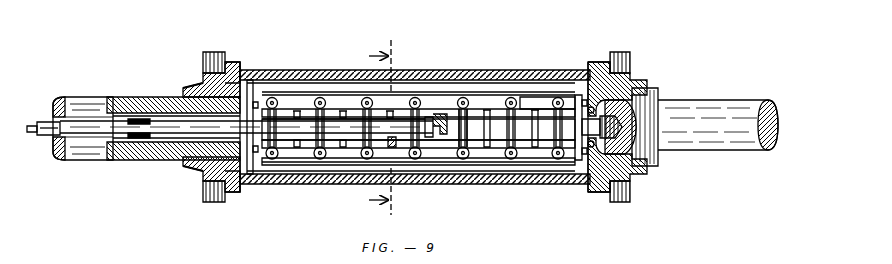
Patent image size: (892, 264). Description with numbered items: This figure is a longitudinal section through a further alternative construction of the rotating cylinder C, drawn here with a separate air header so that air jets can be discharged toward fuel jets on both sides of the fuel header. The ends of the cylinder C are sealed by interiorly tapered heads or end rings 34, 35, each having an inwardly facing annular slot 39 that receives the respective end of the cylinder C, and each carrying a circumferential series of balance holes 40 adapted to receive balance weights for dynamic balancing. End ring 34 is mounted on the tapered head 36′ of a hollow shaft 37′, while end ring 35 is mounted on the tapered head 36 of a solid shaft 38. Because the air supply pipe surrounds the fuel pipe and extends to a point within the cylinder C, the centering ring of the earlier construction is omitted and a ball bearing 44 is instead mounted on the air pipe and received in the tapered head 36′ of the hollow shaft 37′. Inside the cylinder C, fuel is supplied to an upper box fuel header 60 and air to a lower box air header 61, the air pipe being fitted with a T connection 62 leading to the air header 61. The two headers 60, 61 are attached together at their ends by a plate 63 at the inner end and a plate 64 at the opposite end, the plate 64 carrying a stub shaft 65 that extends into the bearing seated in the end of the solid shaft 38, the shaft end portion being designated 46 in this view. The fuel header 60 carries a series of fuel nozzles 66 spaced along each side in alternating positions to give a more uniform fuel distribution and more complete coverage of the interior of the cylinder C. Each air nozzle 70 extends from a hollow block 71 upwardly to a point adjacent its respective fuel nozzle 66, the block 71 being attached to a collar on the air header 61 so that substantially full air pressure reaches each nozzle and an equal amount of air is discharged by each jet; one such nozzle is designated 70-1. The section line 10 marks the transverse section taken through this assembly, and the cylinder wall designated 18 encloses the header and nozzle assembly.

The hollow shaft 37′ is at (141, 90).
The tapered head 36′ is at (183, 88).
The end ring 34 is at (196, 83).
The balance holes 40 is at (213, 52).
The annular slot 39 is at (240, 66).
The cylinder C is at (437, 68).
The cylinder wall 18 is at (415, 107).
The section line 10 is at (376, 127).
The ball bearing 44 is at (244, 99).
The plate 63 is at (258, 160).
The air header 61 is at (427, 151).
The hollow block 71 is at (312, 155).
The fuel nozzles 66 is at (469, 104).
The air nozzle 70 is at (365, 130).
The pin bar 70-1 is at (343, 134).
The T connection 62 is at (393, 143).
The plate 64 is at (576, 160).
The stub shaft 65 is at (590, 165).
The fuel header 60 is at (530, 99).
The shaft end 46 is at (591, 107).
The end ring 35 is at (596, 62).
The tapered head 36 is at (656, 95).
The solid shaft 38 is at (731, 100).